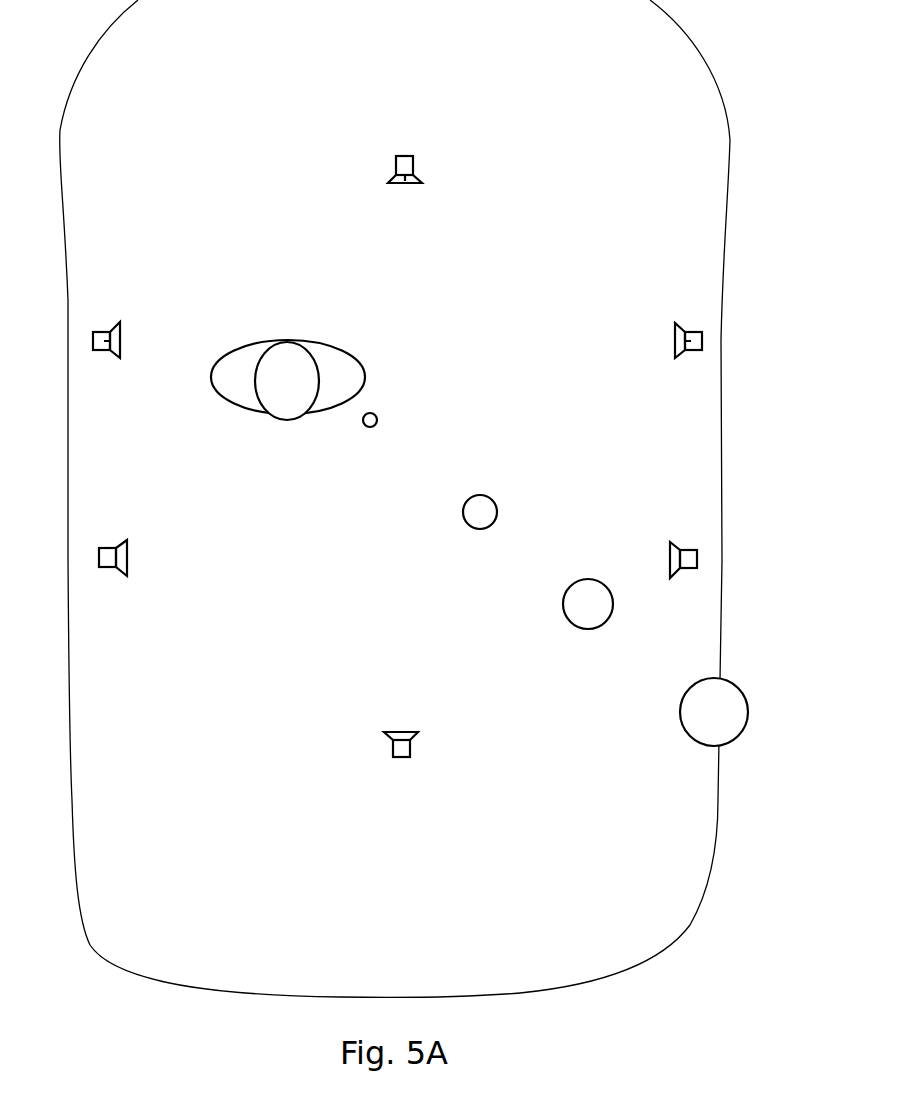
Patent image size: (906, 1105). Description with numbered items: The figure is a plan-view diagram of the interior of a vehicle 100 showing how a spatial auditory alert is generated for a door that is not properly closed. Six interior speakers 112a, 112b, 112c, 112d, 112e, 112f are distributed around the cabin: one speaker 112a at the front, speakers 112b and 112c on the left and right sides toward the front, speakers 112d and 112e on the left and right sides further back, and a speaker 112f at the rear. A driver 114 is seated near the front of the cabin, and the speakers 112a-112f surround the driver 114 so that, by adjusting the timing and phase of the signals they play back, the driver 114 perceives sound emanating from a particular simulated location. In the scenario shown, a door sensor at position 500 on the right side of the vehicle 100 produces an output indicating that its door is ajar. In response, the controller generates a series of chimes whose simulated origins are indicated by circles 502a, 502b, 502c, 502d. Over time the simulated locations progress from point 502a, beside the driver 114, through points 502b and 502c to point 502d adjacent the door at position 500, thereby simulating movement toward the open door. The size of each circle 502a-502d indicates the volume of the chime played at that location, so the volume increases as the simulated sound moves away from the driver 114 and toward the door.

The vehicle 100 is at (727, 175).
The interior speaker 112a is at (408, 183).
The interior speaker 112b is at (100, 352).
The interior speaker 112c is at (690, 352).
The interior speaker 112d is at (104, 548).
The interior speaker 112e is at (687, 548).
The interior speaker 112f is at (400, 758).
The driver 114 is at (324, 348).
The door sensor position 500 is at (648, 717).
The simulated location 502a is at (376, 414).
The simulated location 502b is at (490, 498).
The simulated location 502c is at (582, 578).
The simulated location 502d is at (730, 682).